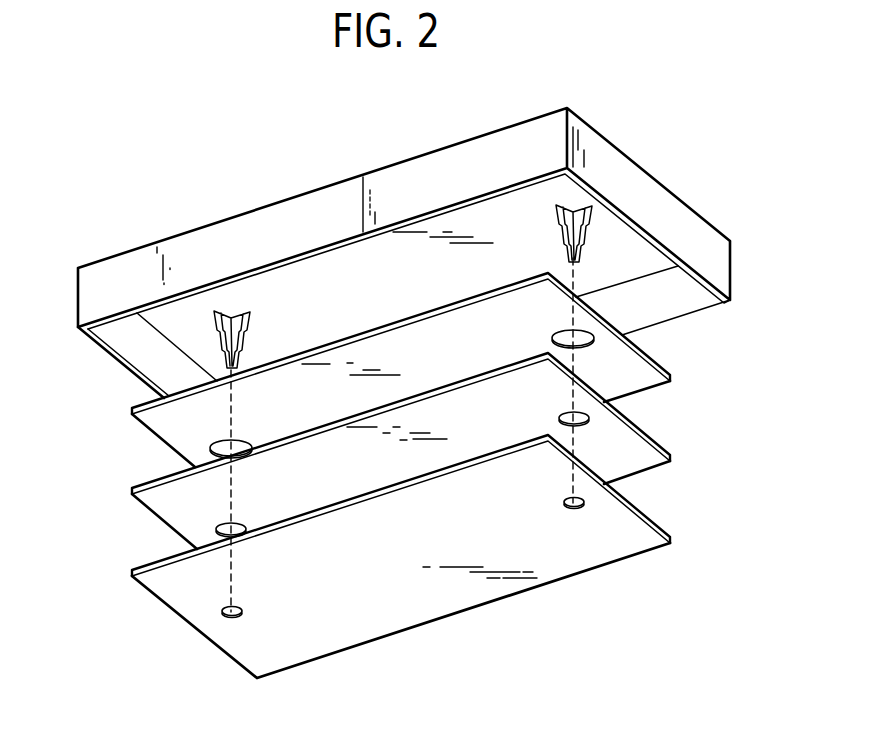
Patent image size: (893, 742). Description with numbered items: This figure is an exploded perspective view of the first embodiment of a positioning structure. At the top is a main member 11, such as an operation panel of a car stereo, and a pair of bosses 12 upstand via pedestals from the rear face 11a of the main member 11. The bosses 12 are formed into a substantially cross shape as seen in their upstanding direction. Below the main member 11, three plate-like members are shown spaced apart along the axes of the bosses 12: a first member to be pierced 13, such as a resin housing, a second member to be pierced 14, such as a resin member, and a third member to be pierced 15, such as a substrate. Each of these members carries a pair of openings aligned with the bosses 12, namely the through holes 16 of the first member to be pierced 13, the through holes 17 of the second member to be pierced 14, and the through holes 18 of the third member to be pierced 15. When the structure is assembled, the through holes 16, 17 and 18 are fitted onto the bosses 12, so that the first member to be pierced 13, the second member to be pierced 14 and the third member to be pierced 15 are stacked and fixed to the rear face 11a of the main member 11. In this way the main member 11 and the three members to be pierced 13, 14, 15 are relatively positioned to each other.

The main member 11 is at (408, 160).
The rear face 11a is at (360, 272).
The boss 12 is at (593, 230).
The first member to be pierced 13 is at (158, 420).
The second member to be pierced 14 is at (160, 498).
The third member to be pierced 15 is at (200, 593).
The through hole 16 is at (594, 344).
The through hole 17 is at (590, 424).
The through hole 18 is at (584, 504).